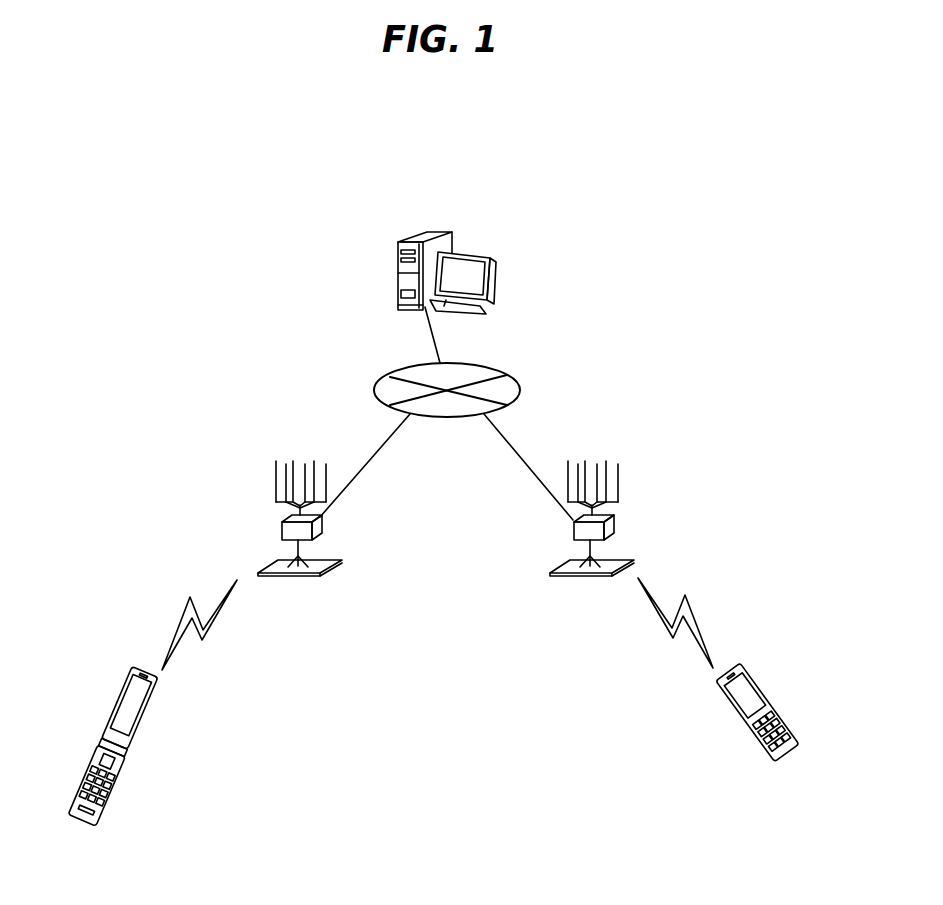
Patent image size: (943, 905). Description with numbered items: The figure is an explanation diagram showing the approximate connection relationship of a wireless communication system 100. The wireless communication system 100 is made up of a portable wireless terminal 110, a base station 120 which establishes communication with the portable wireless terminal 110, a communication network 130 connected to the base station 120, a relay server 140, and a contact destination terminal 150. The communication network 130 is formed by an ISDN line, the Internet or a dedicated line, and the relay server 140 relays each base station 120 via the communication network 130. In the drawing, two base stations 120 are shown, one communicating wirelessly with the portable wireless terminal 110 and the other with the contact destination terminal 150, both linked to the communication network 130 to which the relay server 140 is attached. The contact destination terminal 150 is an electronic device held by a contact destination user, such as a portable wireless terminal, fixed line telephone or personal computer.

The wireless communication system 100 is at (312, 299).
The portable wireless terminal 110 is at (156, 700).
The base station 120 is at (313, 532).
The communication network 130 is at (390, 375).
The relay server 140 is at (452, 231).
The contact destination terminal 150 is at (778, 705).